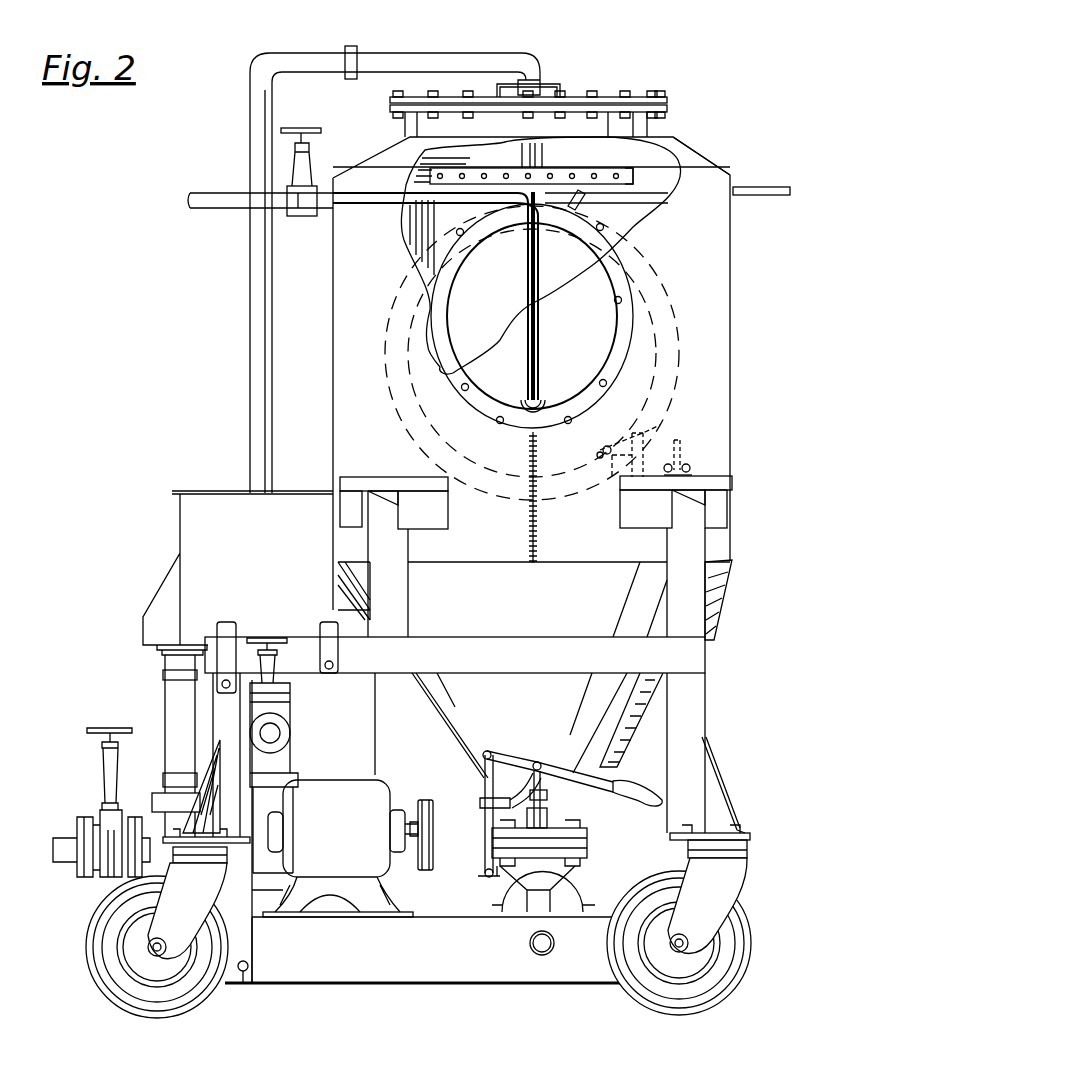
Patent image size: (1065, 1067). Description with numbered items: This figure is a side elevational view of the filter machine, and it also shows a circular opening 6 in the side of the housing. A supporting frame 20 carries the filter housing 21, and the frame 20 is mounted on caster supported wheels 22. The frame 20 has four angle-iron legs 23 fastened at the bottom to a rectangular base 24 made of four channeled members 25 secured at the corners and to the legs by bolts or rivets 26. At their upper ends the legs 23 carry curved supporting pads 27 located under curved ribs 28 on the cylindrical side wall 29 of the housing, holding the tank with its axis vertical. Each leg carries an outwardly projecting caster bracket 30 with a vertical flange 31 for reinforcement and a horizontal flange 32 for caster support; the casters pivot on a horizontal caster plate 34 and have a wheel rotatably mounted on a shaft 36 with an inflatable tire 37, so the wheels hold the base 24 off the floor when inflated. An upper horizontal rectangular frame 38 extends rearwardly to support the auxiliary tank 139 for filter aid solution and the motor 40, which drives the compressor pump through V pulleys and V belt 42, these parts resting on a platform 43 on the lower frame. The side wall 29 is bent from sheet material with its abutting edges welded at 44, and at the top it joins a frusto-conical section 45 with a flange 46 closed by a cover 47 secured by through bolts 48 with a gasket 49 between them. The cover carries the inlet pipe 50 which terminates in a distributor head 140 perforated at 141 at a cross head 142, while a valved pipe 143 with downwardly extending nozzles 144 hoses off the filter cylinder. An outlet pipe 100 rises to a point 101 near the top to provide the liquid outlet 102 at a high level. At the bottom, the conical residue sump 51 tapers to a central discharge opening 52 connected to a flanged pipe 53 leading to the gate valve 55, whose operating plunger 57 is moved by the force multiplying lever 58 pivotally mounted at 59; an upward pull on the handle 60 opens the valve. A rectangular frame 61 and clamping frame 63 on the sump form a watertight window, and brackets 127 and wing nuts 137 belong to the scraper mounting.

The circular access opening with bolted flange ring 6 is at (593, 346).
The supporting frame 20 is at (707, 693).
The filter housing 21 is at (742, 360).
The caster supported wheels 22 is at (736, 890).
The legs 23 is at (222, 715).
The rectangular base 24 is at (437, 975).
The channeled members 25 is at (323, 983).
The bolts or rivets 26 is at (243, 983).
The supporting pads 27 is at (442, 536).
The curved ribs 28 is at (378, 477).
The cylindrical side wall 29 is at (733, 203).
The caster bracket 30 is at (767, 838).
The vertical flange 31 is at (722, 782).
The horizontal flange 32 is at (742, 828).
The caster plate 34 is at (748, 850).
The shaft 36 is at (676, 950).
The inflatable tire 37 is at (130, 1012).
The upper horizontal rectangular frame 38 is at (510, 637).
The motor 40 is at (342, 780).
The V pulleys and V belt 42 is at (435, 810).
The platform 43 is at (406, 906).
The welded seam 44 is at (540, 533).
The frusto-conical section 45 is at (690, 160).
The flange 46 is at (604, 112).
The cover 47 is at (578, 97).
The through bolts 48 is at (628, 91).
The gasket 49 is at (648, 92).
The inlet pipe 50 is at (513, 60).
The conical residue sump 51 is at (470, 718).
The central discharge opening 52 is at (500, 822).
The flanged pipe 53 is at (588, 836).
The gate valve 55 is at (573, 886).
The operating plunger 57 is at (548, 808).
The force multiplying lever 58 is at (606, 781).
The pivot 59 is at (482, 755).
The handle 60 is at (648, 806).
The rectangular frame 61 is at (726, 586).
The clamping frame 63 is at (720, 626).
The outlet pipe 100 is at (540, 241).
The point near the top of the housing 101 is at (533, 195).
The liquid outlet 102 is at (355, 206).
The brackets 127 is at (662, 438).
The wing nuts 137 is at (690, 465).
The auxiliary tank 139 is at (180, 530).
The distributor head 140 is at (558, 170).
The perforations 141 is at (607, 170).
The cross head 142 is at (633, 170).
The valved pipe 143 is at (633, 198).
The nozzles 144 is at (582, 200).